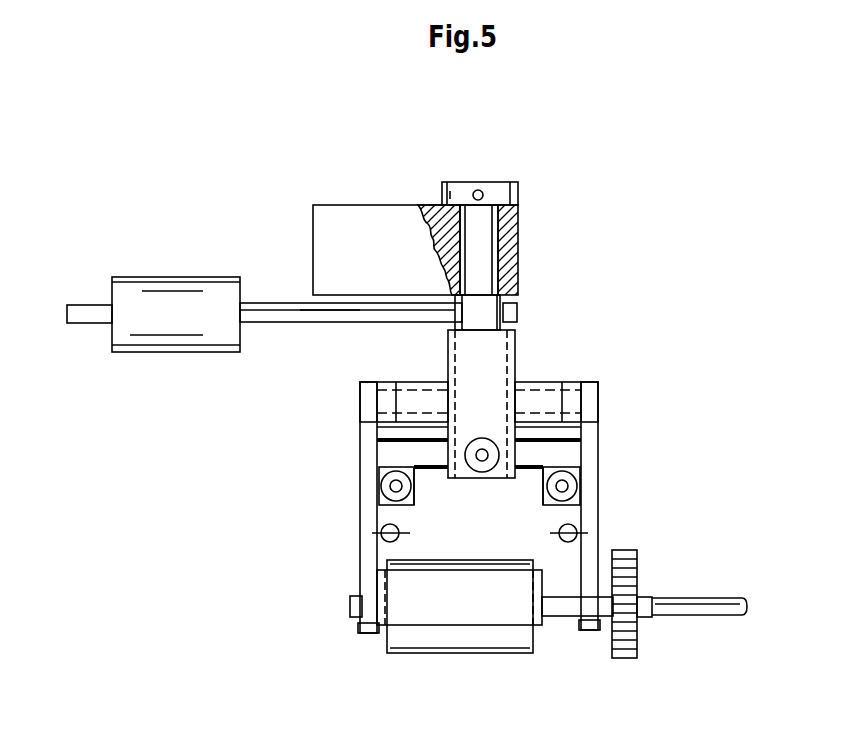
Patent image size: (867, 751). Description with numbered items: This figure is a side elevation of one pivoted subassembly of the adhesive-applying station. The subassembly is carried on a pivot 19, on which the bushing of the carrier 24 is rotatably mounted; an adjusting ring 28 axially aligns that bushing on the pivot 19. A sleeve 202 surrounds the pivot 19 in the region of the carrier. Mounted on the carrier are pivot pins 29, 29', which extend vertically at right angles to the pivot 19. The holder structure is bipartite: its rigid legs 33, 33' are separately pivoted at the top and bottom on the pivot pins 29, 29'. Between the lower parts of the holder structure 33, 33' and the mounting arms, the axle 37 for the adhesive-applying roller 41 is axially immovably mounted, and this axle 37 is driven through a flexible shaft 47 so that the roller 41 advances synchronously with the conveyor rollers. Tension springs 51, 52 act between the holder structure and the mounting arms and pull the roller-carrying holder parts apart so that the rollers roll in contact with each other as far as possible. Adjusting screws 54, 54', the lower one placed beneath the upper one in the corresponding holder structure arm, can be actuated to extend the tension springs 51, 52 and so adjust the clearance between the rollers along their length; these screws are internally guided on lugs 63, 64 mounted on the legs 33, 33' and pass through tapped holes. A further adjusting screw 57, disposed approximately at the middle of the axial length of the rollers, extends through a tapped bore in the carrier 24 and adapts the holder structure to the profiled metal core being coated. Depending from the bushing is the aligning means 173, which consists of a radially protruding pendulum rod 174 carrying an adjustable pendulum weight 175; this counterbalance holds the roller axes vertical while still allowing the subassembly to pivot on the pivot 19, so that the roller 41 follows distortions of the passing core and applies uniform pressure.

The pivot 19 is at (480, 272).
The carrier 24 is at (507, 355).
The adjusting ring 28 is at (500, 190).
The pivot pin 29 is at (557, 381).
The pivot pin 29' is at (404, 375).
The holder structure 33 is at (611, 506).
The holder structure 33' is at (341, 507).
The axle 37 is at (641, 600).
The adhesive-applying roller 41 is at (472, 637).
The flexible shaft 47 is at (700, 607).
The tension spring 51 is at (557, 532).
The tension spring 52 is at (400, 537).
The adjusting screw 54 is at (593, 496).
The adjusting screw 54' is at (360, 499).
The adjusting screw 57 is at (483, 461).
The lug 63 is at (415, 502).
The lug 64 is at (543, 503).
The aligning means 173 is at (272, 303).
The pendulum rod 174 is at (328, 313).
The pendulum weight 175 is at (157, 287).
The bushing 202 is at (512, 241).